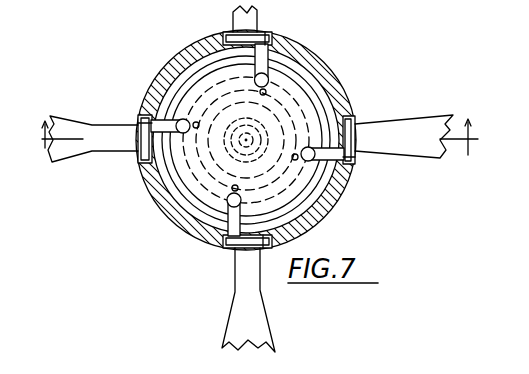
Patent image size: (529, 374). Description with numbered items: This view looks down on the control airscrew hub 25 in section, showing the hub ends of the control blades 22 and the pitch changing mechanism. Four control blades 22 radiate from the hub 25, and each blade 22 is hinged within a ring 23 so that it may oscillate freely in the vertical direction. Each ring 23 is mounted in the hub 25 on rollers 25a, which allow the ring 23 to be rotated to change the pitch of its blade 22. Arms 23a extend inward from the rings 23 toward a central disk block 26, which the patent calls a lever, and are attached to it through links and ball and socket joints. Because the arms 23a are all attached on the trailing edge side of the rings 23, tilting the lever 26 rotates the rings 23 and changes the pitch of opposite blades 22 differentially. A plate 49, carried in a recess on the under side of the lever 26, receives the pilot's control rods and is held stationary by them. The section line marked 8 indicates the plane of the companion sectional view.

The section line 8- 8 is at (261, 126).
The control blade 22 is at (424, 137).
The ring 23 is at (143, 156).
The arm 23a is at (318, 148).
The hub 25 is at (337, 68).
The roller 25a is at (275, 35).
The disk block (lever) 26 is at (213, 179).
The plate 49 is at (202, 112).